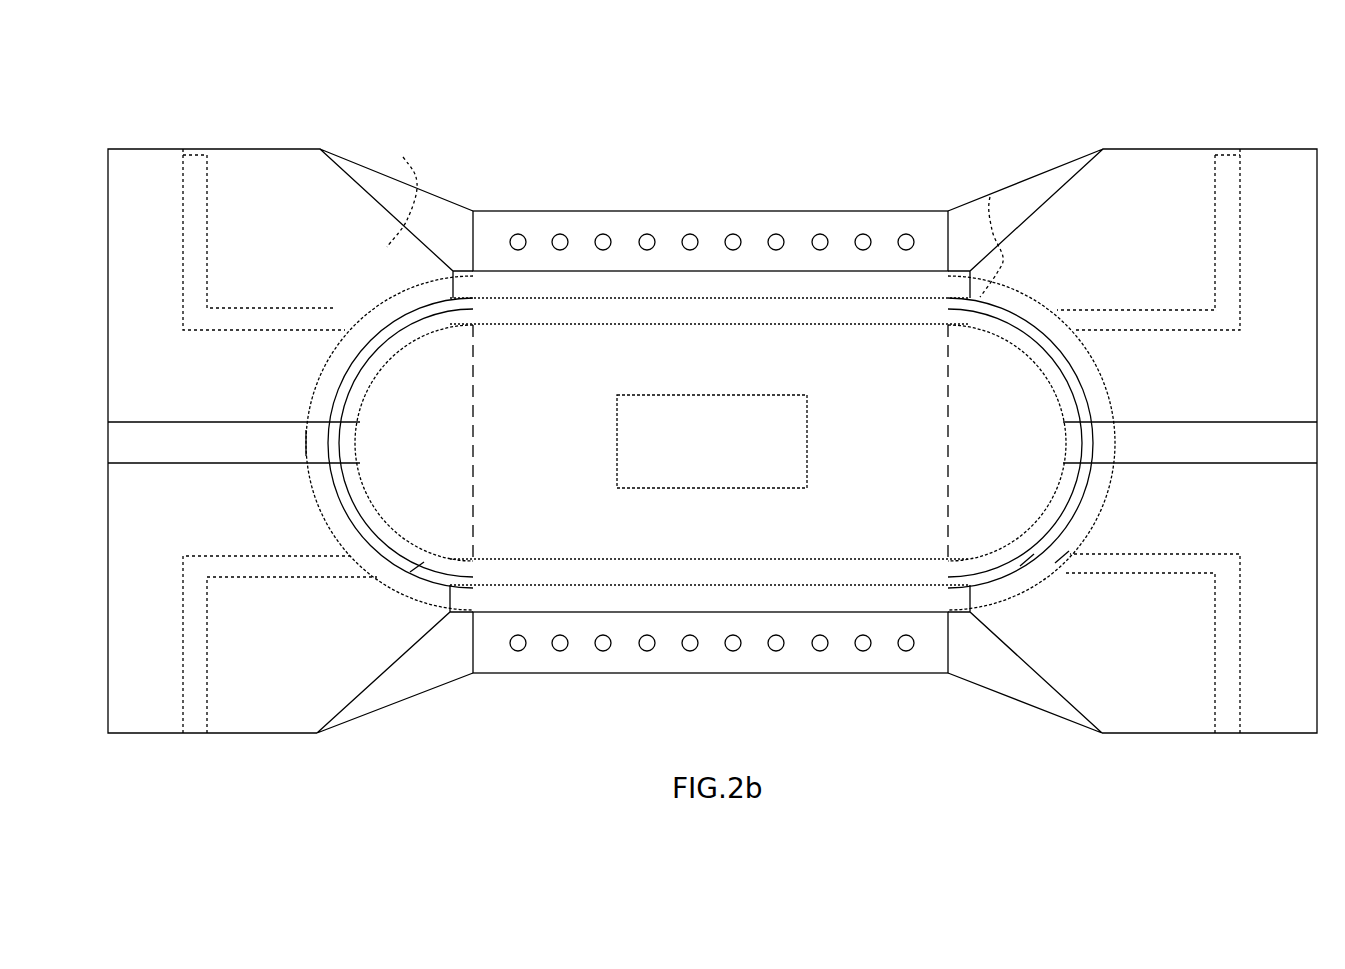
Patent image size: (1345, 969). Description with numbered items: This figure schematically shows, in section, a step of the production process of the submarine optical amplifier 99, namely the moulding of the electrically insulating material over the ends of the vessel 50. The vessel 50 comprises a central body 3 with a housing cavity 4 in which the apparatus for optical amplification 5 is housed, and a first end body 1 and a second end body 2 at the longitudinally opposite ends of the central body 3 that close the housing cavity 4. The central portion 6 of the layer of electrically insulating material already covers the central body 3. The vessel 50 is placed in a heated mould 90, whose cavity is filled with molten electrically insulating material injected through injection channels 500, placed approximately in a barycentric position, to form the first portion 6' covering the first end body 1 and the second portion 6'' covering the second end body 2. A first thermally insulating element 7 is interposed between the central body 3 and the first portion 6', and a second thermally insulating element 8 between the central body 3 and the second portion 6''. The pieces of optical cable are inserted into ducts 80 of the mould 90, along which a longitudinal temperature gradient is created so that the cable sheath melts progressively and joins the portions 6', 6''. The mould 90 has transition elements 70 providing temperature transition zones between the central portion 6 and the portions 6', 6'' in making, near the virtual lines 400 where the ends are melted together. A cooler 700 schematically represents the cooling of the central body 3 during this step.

The first end body 1 is at (1030, 310).
The second end body 2 is at (363, 380).
The central body 3 is at (600, 315).
The housing cavity 4 is at (720, 375).
The apparatus for optical amplification 5 is at (720, 453).
The central portion of the layer of electrically insulating material 6 is at (710, 664).
The first portion of the layer of electrically insulating material 6' is at (1088, 677).
The second portion of the layer of electrically insulating material 6'' is at (297, 612).
The first thermally insulating element 7 is at (1027, 560).
The second thermally insulating element 8 is at (417, 567).
The vessel 50 is at (775, 286).
The transition elements 70 is at (970, 223).
The ducts 80 is at (150, 437).
The mould 90 is at (1262, 130).
The submarine optical amplifier 99 is at (840, 115).
The virtual dashed lines 400 is at (403, 157).
The injection channels 500 is at (198, 157).
The cooler 700 is at (697, 227).